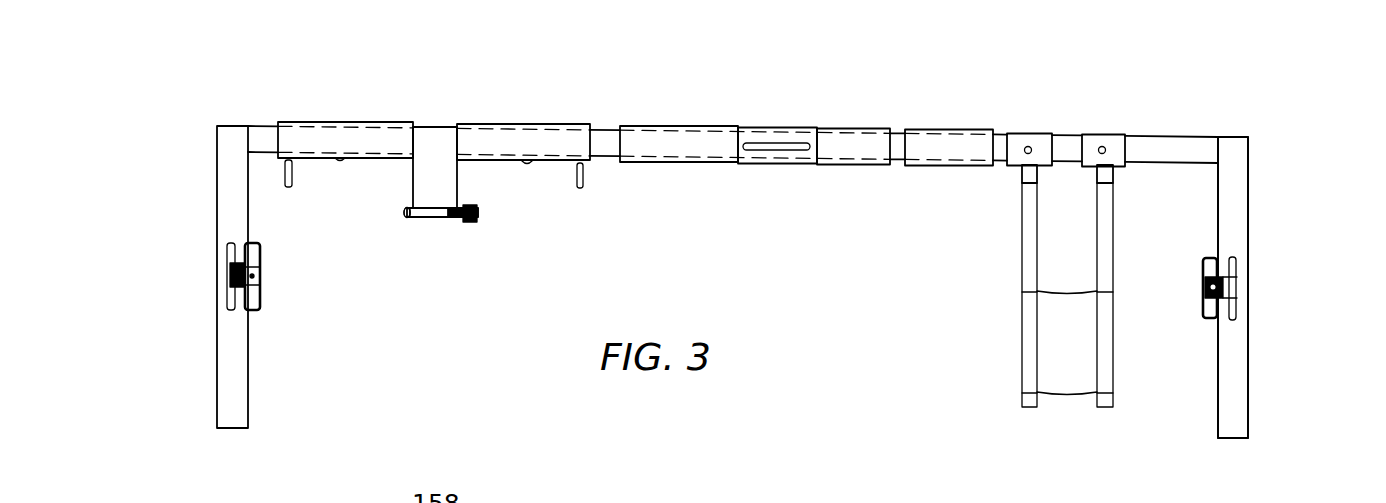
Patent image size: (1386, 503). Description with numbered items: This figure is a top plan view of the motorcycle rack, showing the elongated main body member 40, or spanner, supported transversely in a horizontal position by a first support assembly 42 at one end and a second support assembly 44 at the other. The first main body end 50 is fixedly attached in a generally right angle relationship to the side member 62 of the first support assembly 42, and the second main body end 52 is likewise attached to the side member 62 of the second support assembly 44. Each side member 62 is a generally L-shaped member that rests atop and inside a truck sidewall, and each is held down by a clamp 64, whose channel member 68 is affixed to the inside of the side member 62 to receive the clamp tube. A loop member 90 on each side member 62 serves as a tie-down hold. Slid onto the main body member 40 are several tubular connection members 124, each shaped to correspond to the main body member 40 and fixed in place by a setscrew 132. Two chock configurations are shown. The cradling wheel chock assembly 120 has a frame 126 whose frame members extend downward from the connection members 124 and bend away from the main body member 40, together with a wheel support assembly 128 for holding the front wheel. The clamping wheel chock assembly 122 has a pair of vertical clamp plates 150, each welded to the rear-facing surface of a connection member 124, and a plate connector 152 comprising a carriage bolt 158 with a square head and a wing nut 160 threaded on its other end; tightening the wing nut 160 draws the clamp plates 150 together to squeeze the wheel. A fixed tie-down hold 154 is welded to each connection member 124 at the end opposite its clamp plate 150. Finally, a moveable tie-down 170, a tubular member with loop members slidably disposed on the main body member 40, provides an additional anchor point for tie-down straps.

The main body member 40 is at (663, 140).
The first support assembly 42 is at (207, 250).
The second support assembly 44 is at (1254, 255).
The first main body end 50 is at (257, 123).
The second main body end 52 is at (1210, 137).
The side member 62 is at (1228, 368).
The clamp 64 is at (233, 313).
The channel member 68 is at (1202, 260).
The loop member 90 is at (1237, 262).
The cradling wheel chock assembly 120 is at (1015, 324).
The clamping wheel chock assembly 122 is at (413, 230).
The tubular connection member 124 is at (480, 140).
The frame 126 is at (1022, 240).
The wheel support assembly 128 is at (1052, 360).
The setscrew 132 is at (1102, 147).
The clamp plate 150 is at (412, 183).
The plate connector 152 is at (400, 217).
The fixed tie-down hold 154 is at (582, 188).
The carriage bolt 158 is at (437, 218).
The wing nut 160 is at (470, 223).
The moveable tie-down 170 is at (778, 132).